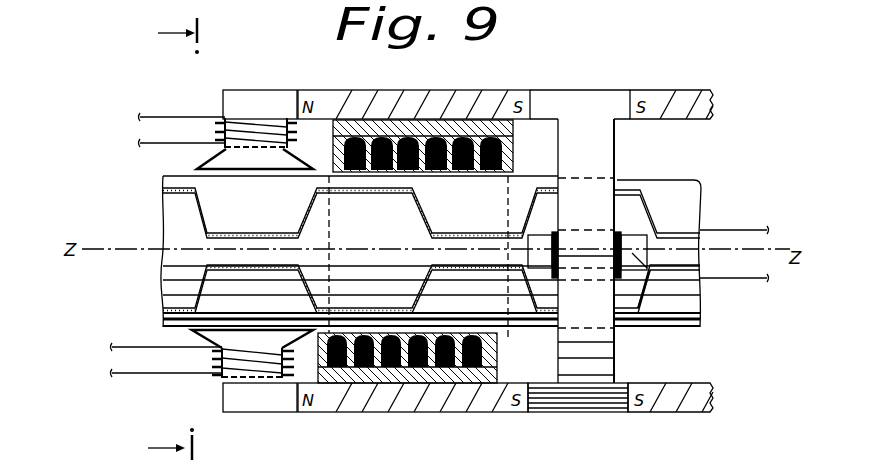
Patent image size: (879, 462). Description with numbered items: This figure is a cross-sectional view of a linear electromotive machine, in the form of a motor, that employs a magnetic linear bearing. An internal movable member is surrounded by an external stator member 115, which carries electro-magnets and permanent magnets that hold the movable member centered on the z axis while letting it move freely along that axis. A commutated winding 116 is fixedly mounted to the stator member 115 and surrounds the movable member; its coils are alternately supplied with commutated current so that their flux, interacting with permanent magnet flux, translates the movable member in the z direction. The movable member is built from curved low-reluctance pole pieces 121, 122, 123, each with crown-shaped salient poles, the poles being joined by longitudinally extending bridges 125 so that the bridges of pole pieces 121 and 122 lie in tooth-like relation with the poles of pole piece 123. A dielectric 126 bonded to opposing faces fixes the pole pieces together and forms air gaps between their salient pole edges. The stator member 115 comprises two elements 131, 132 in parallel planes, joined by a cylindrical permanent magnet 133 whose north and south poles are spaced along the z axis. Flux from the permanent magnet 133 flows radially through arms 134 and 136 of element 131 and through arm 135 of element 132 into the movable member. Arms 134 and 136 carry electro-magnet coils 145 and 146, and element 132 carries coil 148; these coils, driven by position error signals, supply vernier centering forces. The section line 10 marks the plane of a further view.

The section line 10- 10 is at (186, 239).
The external stator member 115 is at (438, 414).
The commutated winding 116 is at (455, 124).
The pole piece 121 is at (688, 292).
The pole piece 122 is at (670, 184).
The pole piece 123 is at (630, 219).
The bridges 125 is at (702, 228).
The dielectric 126 is at (197, 208).
The element 131 is at (248, 96).
The element 132 is at (607, 164).
The cylindrical permanent magnet 133 is at (342, 411).
The radially extending arm 134 is at (212, 158).
The radially extending arm 135 is at (660, 307).
The radially extending arm 136 is at (222, 340).
The electro-magnet coil 145 is at (232, 124).
The electro-magnet coil 146 is at (210, 378).
The coil 148 is at (532, 330).